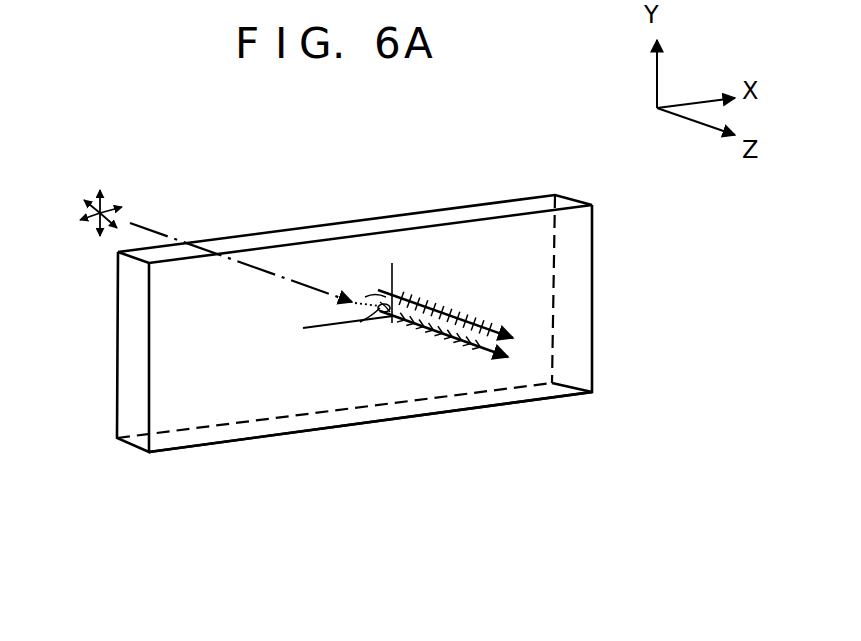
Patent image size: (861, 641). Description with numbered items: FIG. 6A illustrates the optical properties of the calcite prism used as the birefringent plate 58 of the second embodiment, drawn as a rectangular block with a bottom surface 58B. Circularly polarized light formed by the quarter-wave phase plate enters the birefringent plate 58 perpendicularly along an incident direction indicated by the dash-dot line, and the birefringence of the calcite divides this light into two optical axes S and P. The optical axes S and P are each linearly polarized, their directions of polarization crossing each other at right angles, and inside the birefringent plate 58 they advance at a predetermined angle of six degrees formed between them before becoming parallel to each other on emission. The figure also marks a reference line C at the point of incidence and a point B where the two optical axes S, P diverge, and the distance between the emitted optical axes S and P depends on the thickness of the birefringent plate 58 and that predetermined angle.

The birefringent plate 58 is at (127, 367).
The bottom surface of optical element 58B is at (298, 402).
The optical axis P is at (447, 307).
The optical axis S is at (437, 342).
The normal line / reference axis C is at (395, 296).
The incident beam point B is at (390, 324).